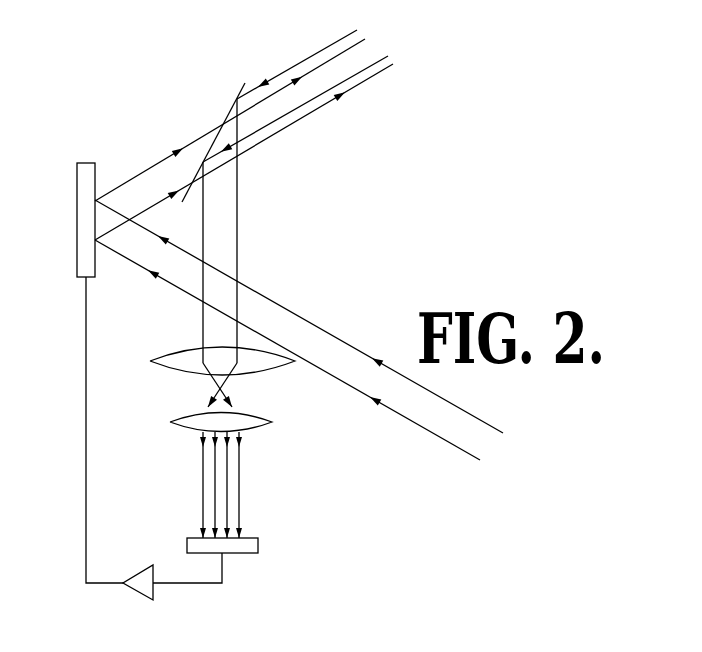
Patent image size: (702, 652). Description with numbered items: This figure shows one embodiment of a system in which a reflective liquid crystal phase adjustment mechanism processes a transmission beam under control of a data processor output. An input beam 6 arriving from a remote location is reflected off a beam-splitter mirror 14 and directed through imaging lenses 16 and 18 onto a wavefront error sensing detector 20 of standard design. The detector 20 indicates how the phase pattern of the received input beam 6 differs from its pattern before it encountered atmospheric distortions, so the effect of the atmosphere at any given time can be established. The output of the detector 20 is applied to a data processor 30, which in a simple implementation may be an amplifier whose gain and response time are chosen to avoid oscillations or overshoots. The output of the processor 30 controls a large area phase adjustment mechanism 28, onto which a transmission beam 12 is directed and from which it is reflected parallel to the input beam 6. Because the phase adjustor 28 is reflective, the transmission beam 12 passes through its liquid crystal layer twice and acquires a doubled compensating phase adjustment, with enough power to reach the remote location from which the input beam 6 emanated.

The input beam 6 is at (332, 46).
The transmission beam 12 is at (310, 321).
The beam-splitter mirror 14 is at (227, 121).
The imaging lens 16 is at (178, 353).
The imaging lens 18 is at (188, 418).
The wavefront error sensing detector 20 is at (259, 547).
The phase adjustment mechanism 28 is at (78, 197).
The data processor 30 is at (142, 570).